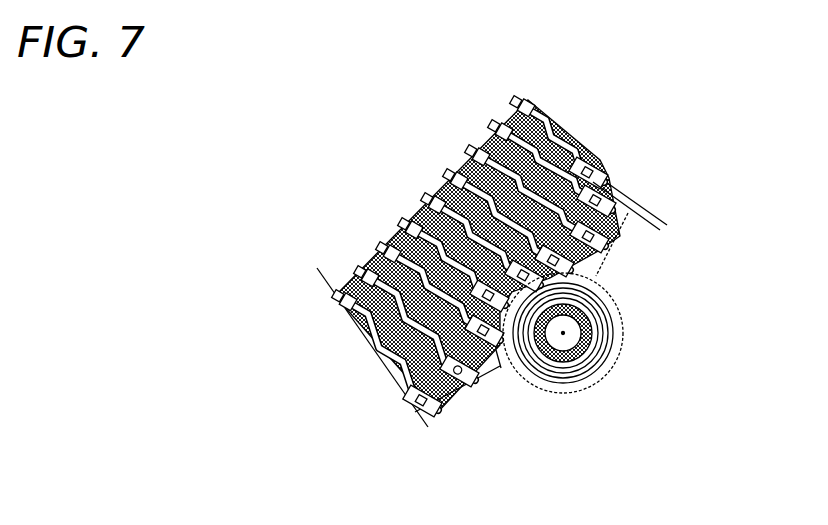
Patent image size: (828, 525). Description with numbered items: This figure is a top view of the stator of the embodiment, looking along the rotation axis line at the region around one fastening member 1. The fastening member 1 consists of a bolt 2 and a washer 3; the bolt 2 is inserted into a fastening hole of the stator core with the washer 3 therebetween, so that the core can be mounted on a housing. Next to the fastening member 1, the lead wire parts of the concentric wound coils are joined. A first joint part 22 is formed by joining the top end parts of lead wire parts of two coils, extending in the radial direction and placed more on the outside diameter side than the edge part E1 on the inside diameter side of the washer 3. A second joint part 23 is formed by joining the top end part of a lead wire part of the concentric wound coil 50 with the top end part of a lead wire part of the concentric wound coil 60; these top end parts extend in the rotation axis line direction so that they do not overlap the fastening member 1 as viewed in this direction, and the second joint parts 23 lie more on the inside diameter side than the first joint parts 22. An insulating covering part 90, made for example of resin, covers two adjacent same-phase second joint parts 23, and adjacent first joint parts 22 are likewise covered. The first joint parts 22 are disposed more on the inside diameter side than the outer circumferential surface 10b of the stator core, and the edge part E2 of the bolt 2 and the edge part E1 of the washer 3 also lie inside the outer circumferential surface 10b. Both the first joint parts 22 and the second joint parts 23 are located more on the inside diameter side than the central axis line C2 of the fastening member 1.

The fastening member 1 is at (610, 355).
The bolt 2 is at (584, 378).
The washer 3 is at (566, 384).
The outer circumferential surface 10b is at (628, 216).
The first joint part 22 is at (490, 368).
The second joint part 23 is at (405, 240).
The concentric wound coil 50 is at (430, 220).
The concentric wound coil 60 is at (450, 207).
The insulating covering part 90 is at (622, 247).
The central axis line C2 is at (566, 332).
The edge part E1 is at (501, 368).
The edge part E2 is at (562, 287).